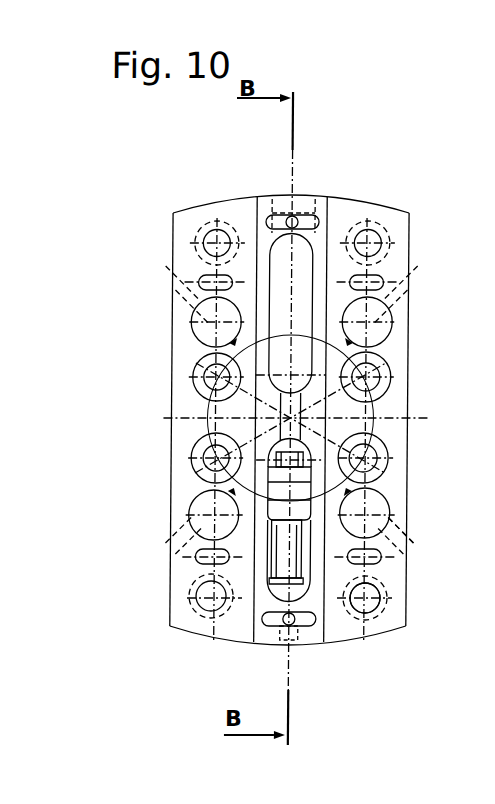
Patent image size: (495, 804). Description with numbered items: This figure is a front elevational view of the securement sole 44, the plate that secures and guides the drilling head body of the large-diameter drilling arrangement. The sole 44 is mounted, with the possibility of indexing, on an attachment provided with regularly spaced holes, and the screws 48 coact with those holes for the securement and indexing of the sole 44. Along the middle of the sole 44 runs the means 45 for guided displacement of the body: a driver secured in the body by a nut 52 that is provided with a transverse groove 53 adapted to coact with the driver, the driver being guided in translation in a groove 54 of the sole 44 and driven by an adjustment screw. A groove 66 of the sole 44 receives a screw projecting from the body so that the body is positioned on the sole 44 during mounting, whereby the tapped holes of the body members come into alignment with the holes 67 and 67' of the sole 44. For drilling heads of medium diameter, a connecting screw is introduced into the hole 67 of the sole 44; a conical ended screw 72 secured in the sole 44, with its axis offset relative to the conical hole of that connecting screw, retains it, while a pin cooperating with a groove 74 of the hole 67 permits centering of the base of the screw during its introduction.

The sole 44 is at (342, 210).
The means for guided displacement 45 is at (347, 653).
The screws 48 is at (200, 450).
The nut 52 is at (303, 470).
The transverse groove 53 is at (299, 491).
The groove 54 is at (272, 558).
The groove 66 is at (198, 558).
The hole 67 is at (391, 513).
The hole 67' is at (283, 637).
The conical ended screw 72 is at (400, 542).
The groove 74 is at (300, 505).